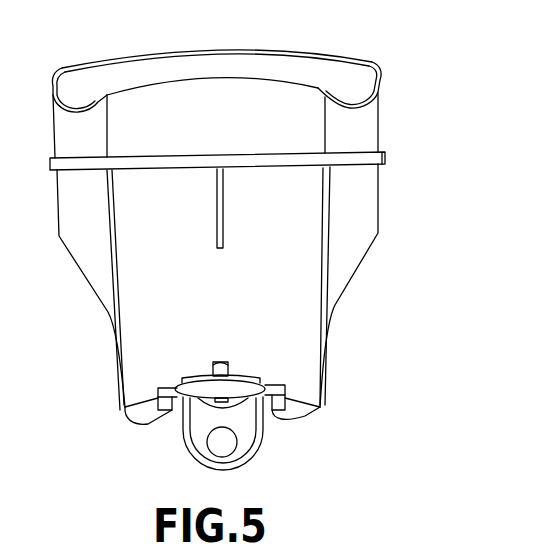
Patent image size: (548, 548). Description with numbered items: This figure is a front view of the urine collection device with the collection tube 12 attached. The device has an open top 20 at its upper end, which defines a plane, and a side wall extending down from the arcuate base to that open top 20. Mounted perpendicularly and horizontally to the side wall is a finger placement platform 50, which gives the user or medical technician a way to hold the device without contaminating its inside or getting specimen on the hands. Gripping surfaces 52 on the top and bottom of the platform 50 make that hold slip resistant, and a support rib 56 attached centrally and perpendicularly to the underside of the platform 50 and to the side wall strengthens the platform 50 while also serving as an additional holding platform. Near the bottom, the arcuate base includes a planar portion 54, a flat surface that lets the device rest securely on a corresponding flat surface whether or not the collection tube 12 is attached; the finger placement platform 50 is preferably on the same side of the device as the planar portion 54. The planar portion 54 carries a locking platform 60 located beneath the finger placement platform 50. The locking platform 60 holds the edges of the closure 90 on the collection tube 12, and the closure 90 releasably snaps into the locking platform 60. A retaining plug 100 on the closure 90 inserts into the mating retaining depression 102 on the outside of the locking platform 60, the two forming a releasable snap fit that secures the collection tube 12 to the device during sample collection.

The collection tube 12 is at (253, 458).
The open top 20 is at (333, 75).
The finger placement platform 50 is at (385, 160).
The gripping surfaces 52 is at (150, 157).
The planar portion 54 is at (143, 413).
The support rib 56 is at (223, 202).
The locking platform 60 is at (177, 400).
The closure 90 is at (242, 380).
The retaining plug 100 is at (213, 370).
The retaining depression 102 is at (222, 361).